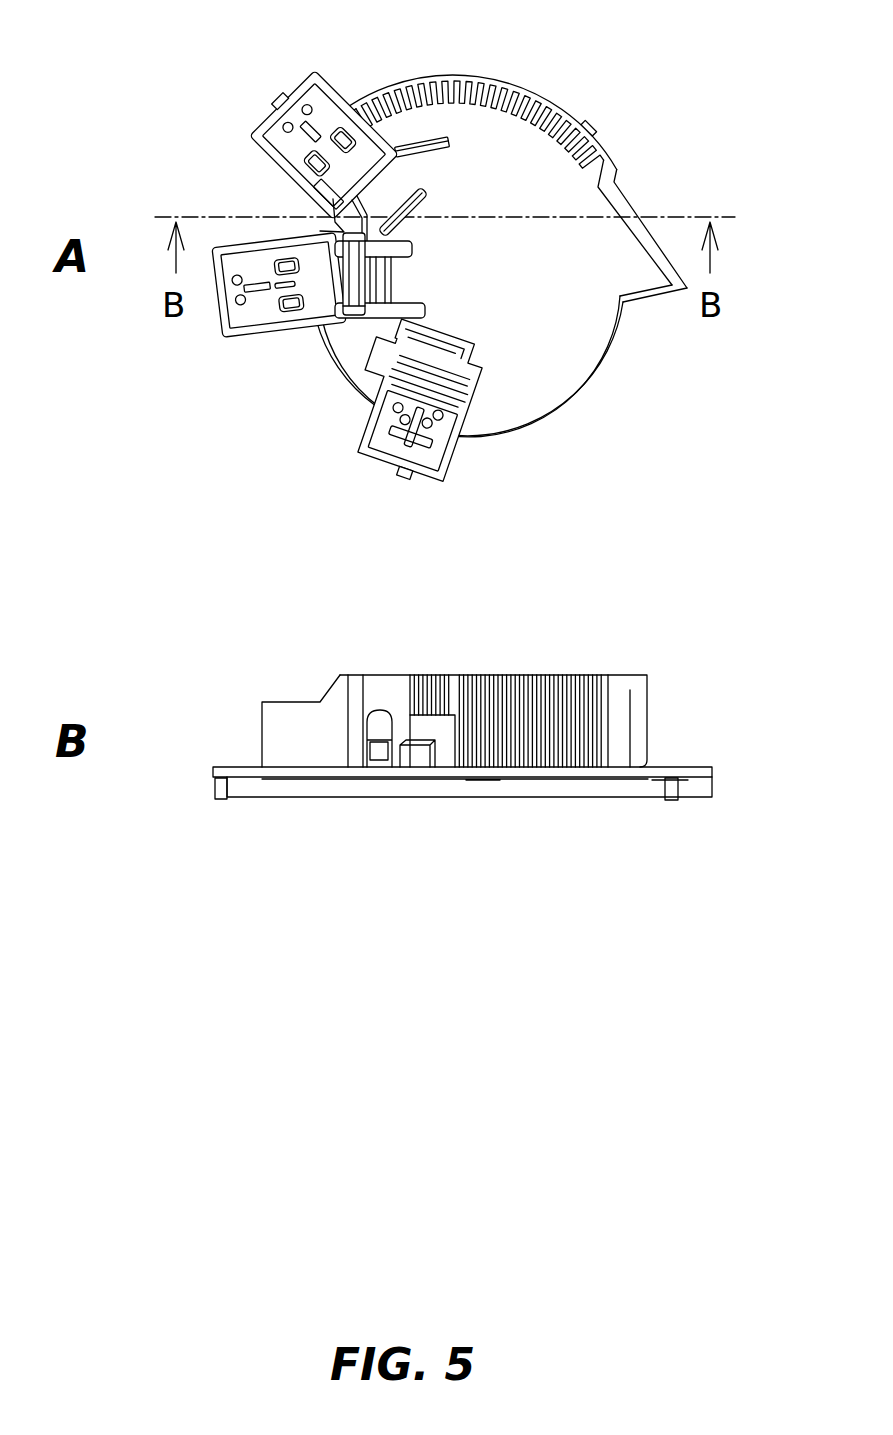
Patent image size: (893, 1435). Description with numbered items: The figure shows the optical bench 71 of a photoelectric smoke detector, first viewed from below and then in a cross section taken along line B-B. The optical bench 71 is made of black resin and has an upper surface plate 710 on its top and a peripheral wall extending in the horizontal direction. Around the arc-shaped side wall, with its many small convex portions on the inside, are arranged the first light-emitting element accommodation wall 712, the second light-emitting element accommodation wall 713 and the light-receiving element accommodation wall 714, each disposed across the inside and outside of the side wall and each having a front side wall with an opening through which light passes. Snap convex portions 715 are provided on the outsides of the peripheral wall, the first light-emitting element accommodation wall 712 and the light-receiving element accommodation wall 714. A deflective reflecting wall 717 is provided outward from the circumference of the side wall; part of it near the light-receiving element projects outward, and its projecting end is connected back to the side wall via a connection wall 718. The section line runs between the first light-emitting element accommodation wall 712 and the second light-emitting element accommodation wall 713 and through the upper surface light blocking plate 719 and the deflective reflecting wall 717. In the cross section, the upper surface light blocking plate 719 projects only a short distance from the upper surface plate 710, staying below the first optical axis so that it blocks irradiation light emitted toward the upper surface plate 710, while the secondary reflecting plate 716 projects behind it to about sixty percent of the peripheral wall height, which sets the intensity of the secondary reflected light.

In FIG. 5A, the optical bench 71 is at (714, 78).
In FIG. 5B, the optical bench 71 is at (738, 672).
In FIG. 5B, the upper surface plate 710 is at (457, 773).
In FIG. 5A, the first light-emitting element accommodation wall 712 is at (283, 160).
In FIG. 5B, the first light-emitting element accommodation wall 712 is at (285, 728).
In FIG. 5A, the second light-emitting element accommodation wall 713 is at (270, 330).
In FIG. 5A, the light-receiving element accommodation wall 714 is at (468, 408).
In FIG. 5A, the snap convex portions 715 is at (272, 92).
In FIG. 5A, the secondary reflecting plate 716 is at (424, 150).
In FIG. 5B, the secondary reflecting plate 716 is at (432, 727).
In FIG. 5A, the deflective reflecting wall 717 is at (632, 200).
In FIG. 5B, the deflective reflecting wall 717 is at (646, 722).
In FIG. 5A, the connection wall 718 is at (652, 300).
In FIG. 5A, the upper surface light blocking plate 719 is at (430, 214).
In FIG. 5B, the upper surface light blocking plate 719 is at (420, 762).